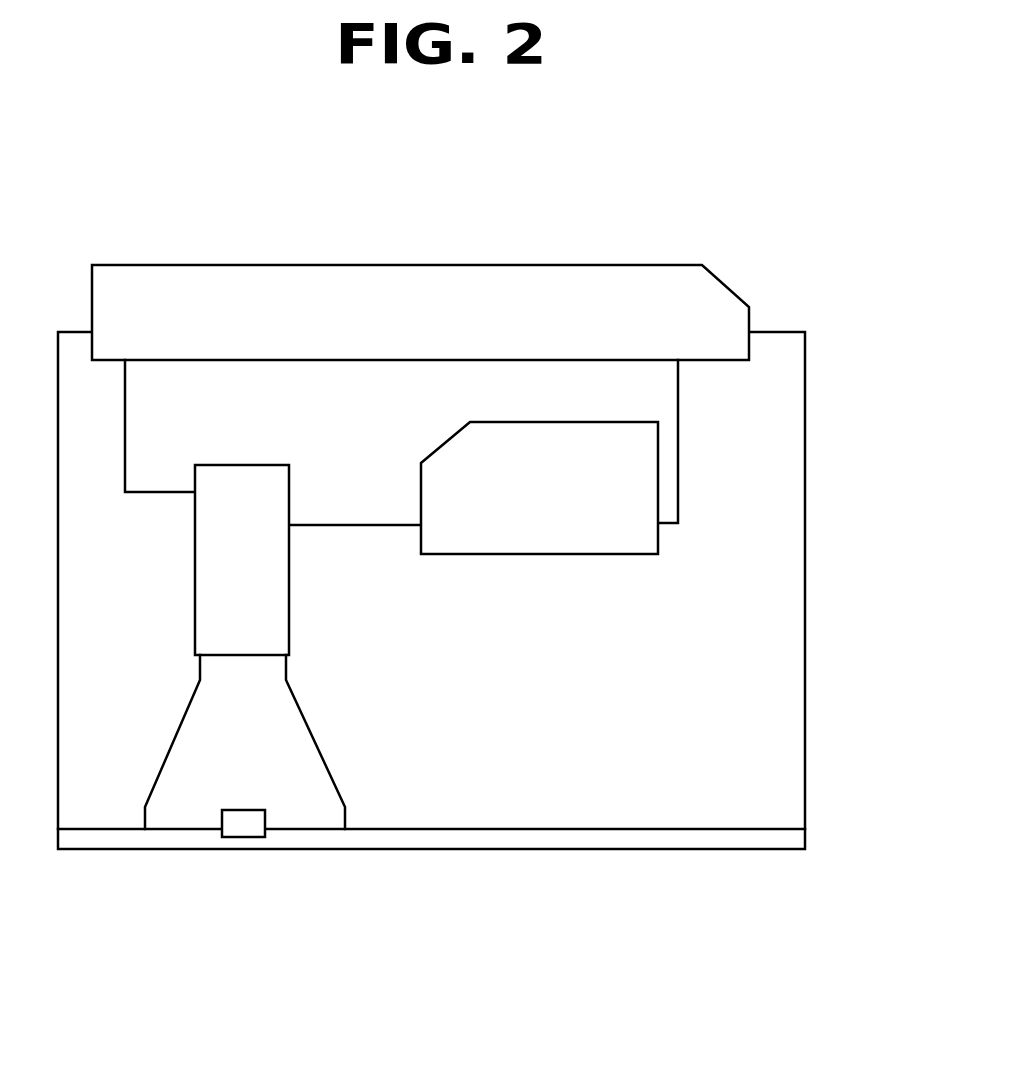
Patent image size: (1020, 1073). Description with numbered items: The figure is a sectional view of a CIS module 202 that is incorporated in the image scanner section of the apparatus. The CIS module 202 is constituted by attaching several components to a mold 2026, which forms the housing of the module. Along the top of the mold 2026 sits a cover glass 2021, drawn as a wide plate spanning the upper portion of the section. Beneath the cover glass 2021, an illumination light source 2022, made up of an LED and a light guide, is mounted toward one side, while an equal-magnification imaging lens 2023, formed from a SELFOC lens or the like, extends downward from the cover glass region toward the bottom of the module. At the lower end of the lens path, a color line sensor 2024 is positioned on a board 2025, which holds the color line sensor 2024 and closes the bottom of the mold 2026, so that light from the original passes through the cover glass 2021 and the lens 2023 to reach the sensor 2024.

The CIS module 202 is at (302, 202).
The cover glass 2021 is at (557, 263).
The illumination light source 2022 is at (557, 556).
The equal-magnification imaging lens 2023 is at (257, 463).
The color line sensor 2024 is at (243, 839).
The board 2025 is at (557, 851).
The mold 2026 is at (806, 568).